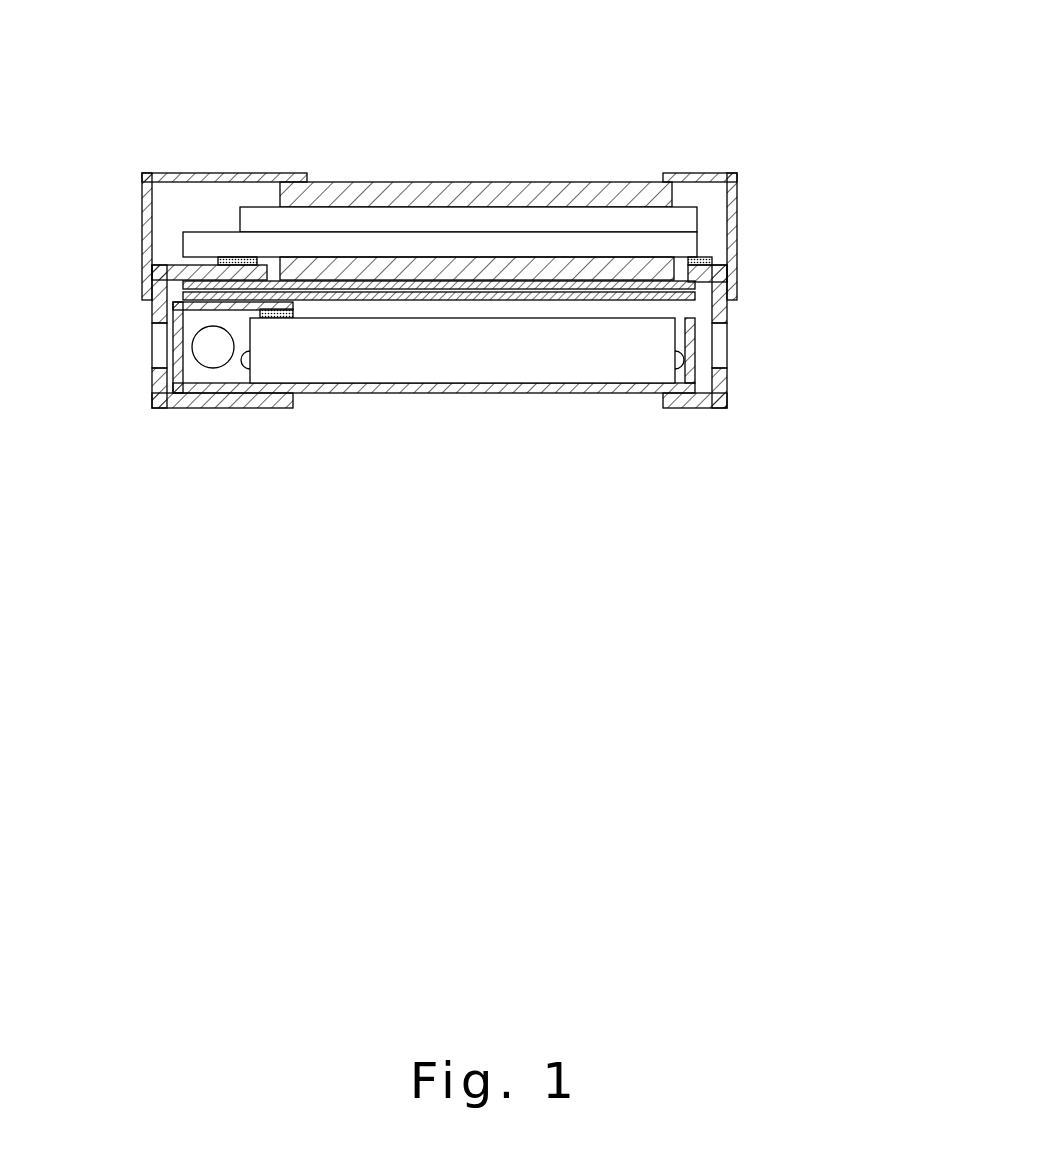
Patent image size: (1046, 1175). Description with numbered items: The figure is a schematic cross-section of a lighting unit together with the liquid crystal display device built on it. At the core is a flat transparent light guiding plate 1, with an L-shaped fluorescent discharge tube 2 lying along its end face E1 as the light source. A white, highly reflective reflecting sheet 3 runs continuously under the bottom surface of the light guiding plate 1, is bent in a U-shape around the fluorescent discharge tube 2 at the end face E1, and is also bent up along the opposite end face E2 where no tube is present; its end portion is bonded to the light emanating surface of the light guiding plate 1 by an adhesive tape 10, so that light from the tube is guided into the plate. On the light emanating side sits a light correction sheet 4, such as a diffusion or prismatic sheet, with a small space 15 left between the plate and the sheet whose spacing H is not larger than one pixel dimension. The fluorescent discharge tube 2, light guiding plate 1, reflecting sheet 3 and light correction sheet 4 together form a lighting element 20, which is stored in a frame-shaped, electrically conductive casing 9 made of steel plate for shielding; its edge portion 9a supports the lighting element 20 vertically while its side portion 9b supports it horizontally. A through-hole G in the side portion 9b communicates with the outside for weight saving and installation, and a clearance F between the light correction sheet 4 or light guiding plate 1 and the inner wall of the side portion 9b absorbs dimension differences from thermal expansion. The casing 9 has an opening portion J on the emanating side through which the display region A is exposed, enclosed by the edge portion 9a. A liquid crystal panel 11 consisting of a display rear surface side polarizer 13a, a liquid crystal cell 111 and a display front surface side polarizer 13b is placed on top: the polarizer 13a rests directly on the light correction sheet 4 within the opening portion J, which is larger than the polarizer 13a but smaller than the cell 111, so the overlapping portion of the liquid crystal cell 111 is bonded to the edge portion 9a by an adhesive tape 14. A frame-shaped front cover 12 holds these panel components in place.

The light guiding plate 1 is at (617, 350).
The fluorescent discharge tube 2 is at (208, 357).
The reflecting sheet 3 is at (407, 390).
The light correction sheet 4 is at (441, 297).
The casing 9 is at (847, 212).
The edge portion 9a is at (680, 250).
The side portion 9b is at (728, 385).
The adhesive tape 10 is at (277, 318).
The liquid crystal panel 11 is at (440, 171).
The front cover 12 is at (737, 178).
The display rear surface side polarizer 13a is at (363, 100).
The display front surface side polarizer 13b is at (384, 196).
The adhesive tape 14 is at (232, 257).
The space 15 is at (568, 312).
The lighting element 20 is at (145, 282).
The liquid crystal cell 111 is at (447, 230).
The display region A is at (308, 173).
The end face E1 is at (254, 372).
The end face E2 is at (676, 366).
The clearance F is at (703, 343).
The through-hole G is at (718, 350).
The spacing H is at (695, 300).
The opening portion J is at (681, 276).